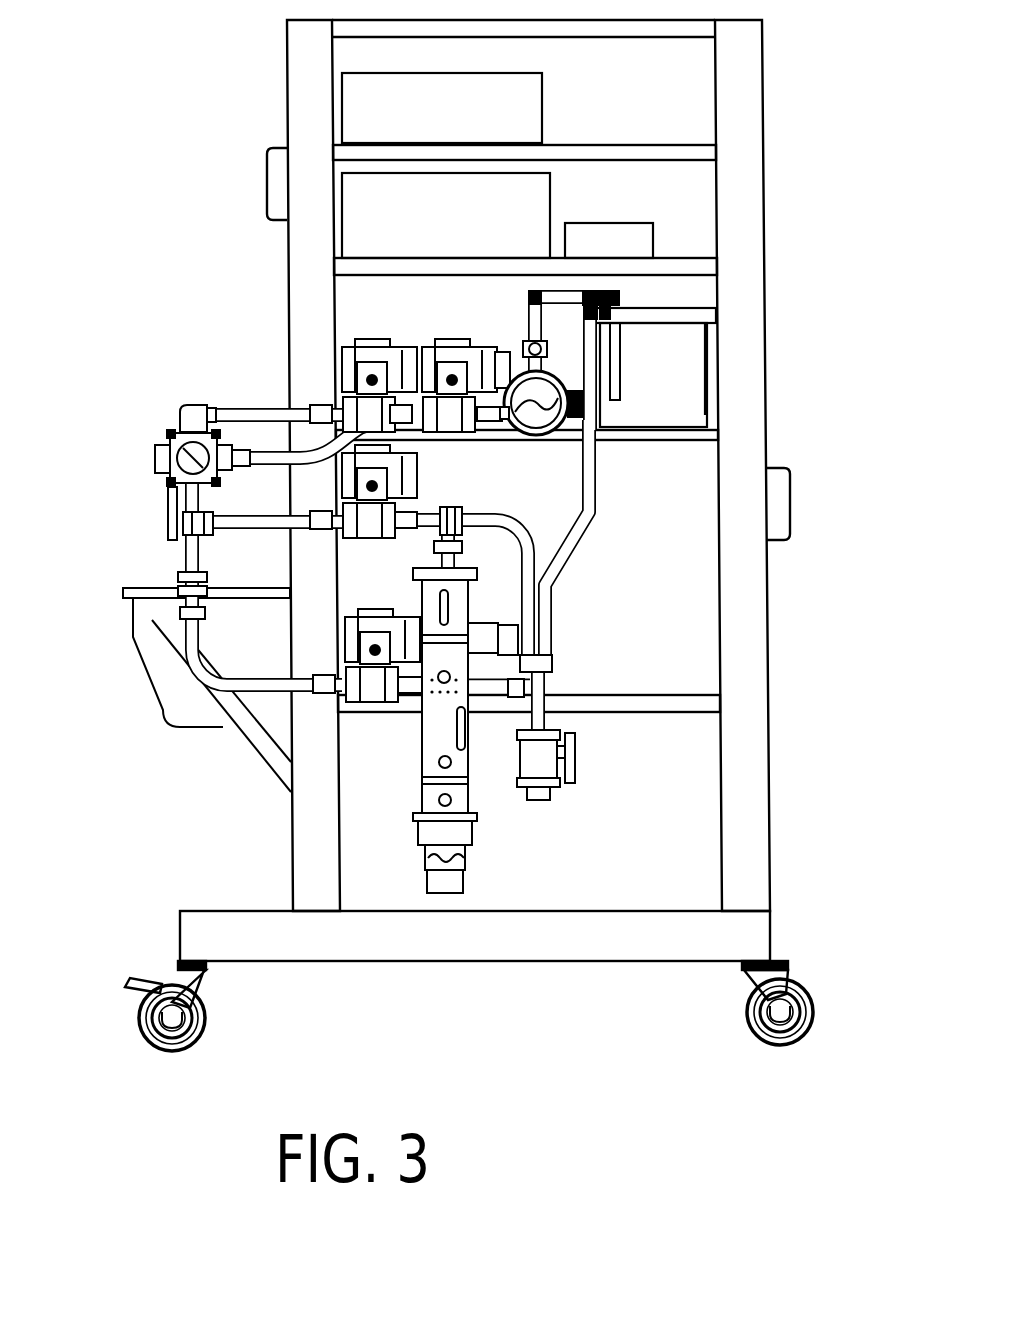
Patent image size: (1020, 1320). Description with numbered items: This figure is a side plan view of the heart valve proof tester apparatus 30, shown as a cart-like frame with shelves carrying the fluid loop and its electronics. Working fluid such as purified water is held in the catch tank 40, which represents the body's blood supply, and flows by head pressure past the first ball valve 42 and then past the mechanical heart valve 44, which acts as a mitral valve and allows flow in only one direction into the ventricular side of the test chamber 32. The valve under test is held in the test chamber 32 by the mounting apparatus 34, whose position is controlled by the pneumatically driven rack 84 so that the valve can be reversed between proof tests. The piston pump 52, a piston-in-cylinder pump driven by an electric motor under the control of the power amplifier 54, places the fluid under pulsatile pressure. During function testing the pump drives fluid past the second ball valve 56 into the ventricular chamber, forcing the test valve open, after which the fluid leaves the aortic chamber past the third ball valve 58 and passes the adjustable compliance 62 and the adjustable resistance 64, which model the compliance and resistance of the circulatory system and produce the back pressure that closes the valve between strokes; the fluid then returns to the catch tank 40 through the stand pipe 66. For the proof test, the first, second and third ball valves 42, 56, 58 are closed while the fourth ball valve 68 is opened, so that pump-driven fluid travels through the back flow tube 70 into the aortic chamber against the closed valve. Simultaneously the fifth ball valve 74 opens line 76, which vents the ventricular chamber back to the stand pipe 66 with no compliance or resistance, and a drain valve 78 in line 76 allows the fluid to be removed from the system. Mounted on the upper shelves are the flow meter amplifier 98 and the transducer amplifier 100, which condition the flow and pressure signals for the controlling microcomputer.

The test apparatus 30 is at (800, 86).
The test chamber 32 is at (180, 405).
The mounting apparatus 34 is at (162, 434).
The catch tank 40 is at (685, 387).
The first ball valve 42 is at (445, 357).
The mechanical heart valve 44 is at (200, 463).
The piston pump 52 is at (450, 747).
The power amplifier 54 is at (348, 233).
The second ball valve 56 is at (423, 480).
The third ball valve 58 is at (352, 343).
The adjustable compliance 62 is at (556, 420).
The adjustable resistance 64 is at (527, 343).
The stand pipe 66 is at (617, 345).
The fourth ball valve 68 is at (507, 630).
The back flow tube 70 is at (516, 510).
The fifth ball valve 74 is at (400, 613).
The line 76 is at (588, 515).
The drain valve 78 is at (540, 757).
The pneumatically driven rack 84 is at (173, 500).
The flow meter amplifier 98 is at (632, 230).
The transducer amplifier 100 is at (507, 95).